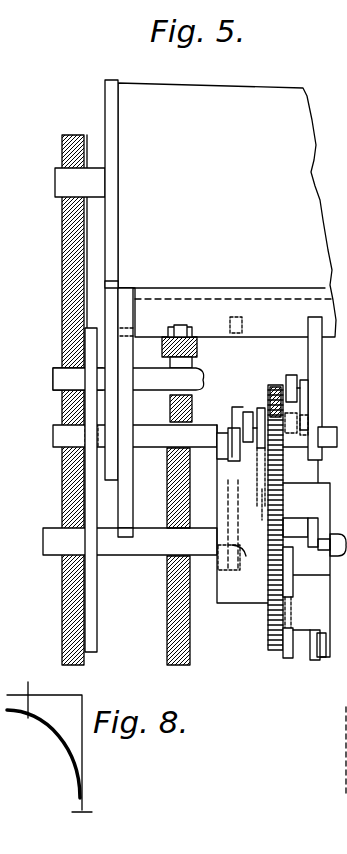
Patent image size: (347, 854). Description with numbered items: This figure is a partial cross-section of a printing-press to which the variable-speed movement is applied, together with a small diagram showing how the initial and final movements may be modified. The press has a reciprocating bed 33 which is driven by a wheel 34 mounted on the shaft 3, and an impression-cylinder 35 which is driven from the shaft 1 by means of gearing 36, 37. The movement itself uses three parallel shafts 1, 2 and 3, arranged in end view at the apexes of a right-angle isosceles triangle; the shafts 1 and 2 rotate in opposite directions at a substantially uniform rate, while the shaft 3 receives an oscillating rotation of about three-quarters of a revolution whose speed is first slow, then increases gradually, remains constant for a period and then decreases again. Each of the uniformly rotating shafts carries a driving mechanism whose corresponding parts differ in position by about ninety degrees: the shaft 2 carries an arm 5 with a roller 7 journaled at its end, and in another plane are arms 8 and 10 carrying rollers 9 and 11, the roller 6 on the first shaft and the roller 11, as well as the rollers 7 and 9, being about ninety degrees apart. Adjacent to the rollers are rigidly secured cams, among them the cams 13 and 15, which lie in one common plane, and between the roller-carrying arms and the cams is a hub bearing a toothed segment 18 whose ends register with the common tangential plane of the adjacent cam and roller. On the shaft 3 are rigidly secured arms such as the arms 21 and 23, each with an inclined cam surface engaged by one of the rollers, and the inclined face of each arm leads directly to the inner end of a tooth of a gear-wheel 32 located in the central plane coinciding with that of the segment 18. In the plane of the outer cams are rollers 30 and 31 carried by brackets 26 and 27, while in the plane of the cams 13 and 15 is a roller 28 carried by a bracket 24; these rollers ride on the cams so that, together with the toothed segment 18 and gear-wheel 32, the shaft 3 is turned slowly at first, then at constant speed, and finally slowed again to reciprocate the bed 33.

The shaft 1 is at (130, 400).
The shaft 2 is at (335, 552).
The shaft 3 is at (135, 436).
The arm 5 is at (217, 445).
The roller 6 is at (217, 562).
The roller 7 is at (232, 427).
The arm 8 is at (330, 536).
The roller 9 is at (308, 527).
The arm 10 is at (320, 660).
The roller 11 is at (310, 645).
The cam 13 is at (293, 572).
The cam 15 is at (288, 658).
The toothed segment 18 is at (283, 498).
The arm 21 is at (241, 557).
The arm 23 is at (327, 388).
The bracket 24 is at (308, 390).
The bracket 26 is at (228, 481).
The bracket 27 is at (260, 408).
The roller 28 is at (292, 376).
The roller 30 is at (262, 489).
The roller 31 is at (248, 412).
The gear-wheel 32 is at (274, 387).
The reciprocating bed 33 is at (234, 316).
The wheel 34 is at (133, 405).
The impression-cylinder 35 is at (227, 210).
The gearing 36 is at (85, 433).
The gearing 37 is at (118, 286).